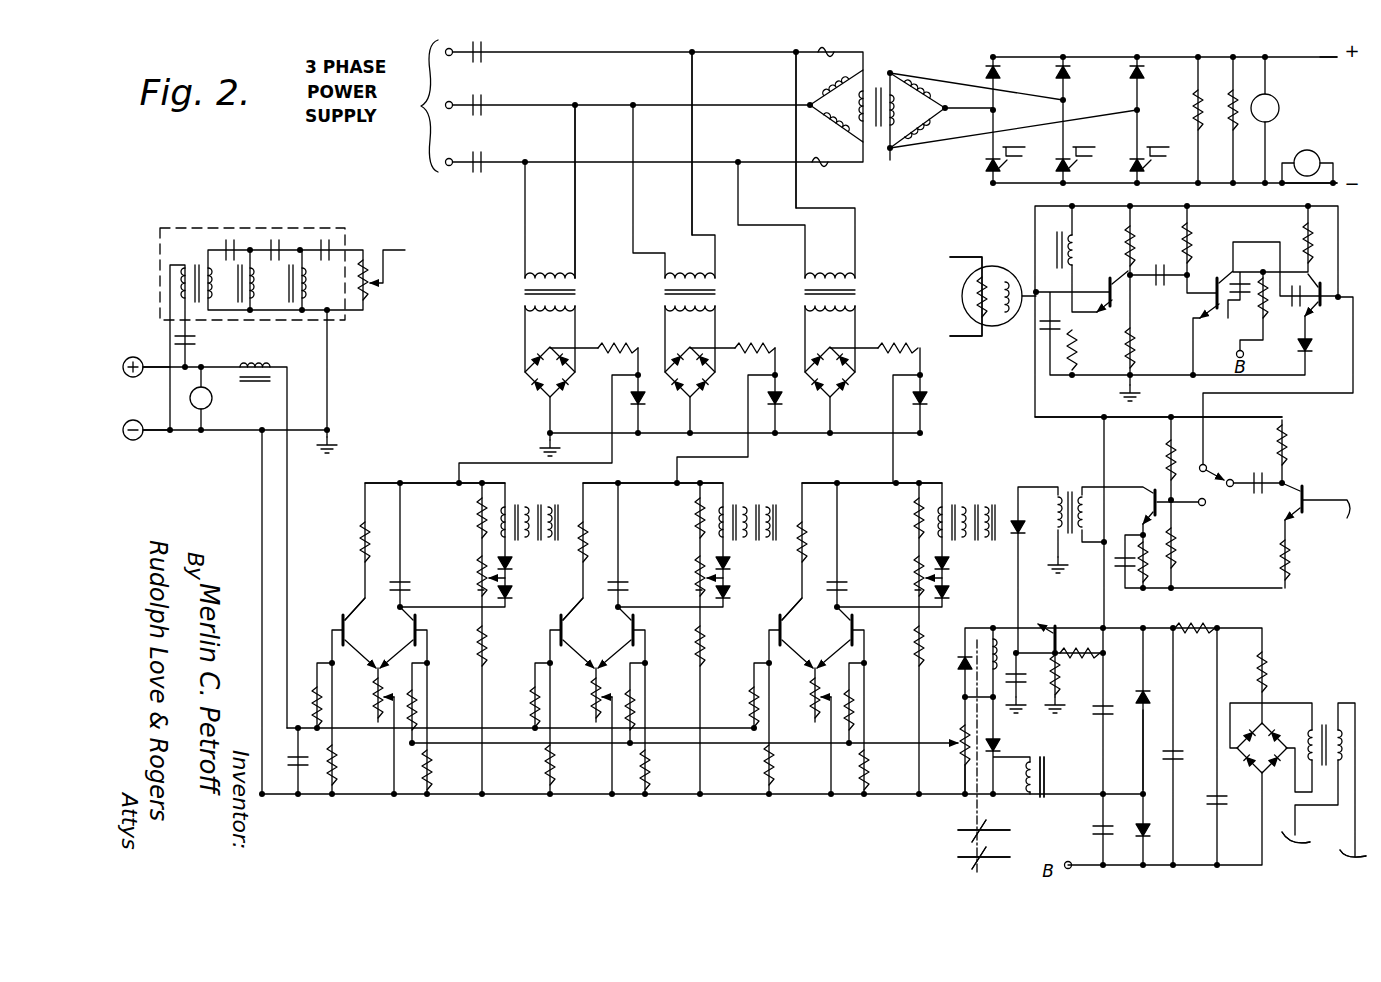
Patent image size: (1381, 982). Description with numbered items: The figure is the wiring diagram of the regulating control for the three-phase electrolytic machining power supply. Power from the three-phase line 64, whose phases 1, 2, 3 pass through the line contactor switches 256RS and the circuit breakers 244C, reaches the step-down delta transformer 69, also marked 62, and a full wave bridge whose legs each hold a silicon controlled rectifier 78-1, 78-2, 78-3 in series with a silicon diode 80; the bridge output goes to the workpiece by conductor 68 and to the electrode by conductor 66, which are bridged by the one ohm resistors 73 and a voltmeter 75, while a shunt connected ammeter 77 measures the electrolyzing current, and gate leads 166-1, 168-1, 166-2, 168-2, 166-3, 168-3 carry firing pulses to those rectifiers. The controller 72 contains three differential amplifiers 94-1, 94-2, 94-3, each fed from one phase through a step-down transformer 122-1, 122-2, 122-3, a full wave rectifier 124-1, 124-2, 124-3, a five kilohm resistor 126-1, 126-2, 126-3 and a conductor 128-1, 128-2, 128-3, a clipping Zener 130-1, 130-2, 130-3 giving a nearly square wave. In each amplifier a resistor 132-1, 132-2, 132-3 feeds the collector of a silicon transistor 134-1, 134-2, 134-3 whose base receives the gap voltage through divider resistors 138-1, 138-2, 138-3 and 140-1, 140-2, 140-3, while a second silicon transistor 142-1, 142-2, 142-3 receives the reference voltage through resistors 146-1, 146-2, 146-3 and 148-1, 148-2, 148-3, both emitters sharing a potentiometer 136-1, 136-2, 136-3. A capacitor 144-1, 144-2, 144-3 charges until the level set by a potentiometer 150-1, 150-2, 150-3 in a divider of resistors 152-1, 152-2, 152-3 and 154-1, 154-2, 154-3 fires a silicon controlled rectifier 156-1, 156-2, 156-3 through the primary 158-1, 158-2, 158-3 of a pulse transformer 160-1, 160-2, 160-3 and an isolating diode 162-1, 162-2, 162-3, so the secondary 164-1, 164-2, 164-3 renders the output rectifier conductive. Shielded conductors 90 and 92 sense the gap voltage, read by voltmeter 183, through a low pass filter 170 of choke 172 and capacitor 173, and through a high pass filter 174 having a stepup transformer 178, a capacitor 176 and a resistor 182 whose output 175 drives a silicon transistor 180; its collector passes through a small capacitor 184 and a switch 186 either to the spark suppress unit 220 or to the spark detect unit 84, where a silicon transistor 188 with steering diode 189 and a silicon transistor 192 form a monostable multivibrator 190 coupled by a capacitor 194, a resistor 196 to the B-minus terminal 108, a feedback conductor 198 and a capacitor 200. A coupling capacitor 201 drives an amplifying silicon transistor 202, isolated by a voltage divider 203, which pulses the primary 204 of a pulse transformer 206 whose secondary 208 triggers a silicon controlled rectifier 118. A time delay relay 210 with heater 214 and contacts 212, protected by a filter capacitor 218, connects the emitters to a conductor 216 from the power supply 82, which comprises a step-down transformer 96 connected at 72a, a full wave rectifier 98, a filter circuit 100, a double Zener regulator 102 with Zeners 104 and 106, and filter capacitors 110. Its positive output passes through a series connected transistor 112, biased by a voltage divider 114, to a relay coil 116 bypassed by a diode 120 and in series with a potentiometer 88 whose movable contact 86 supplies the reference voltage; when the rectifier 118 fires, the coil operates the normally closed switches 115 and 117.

The phase line 1 is at (572, 108).
The phase line 2 is at (685, 56).
The phase line 3 is at (790, 60).
The three phase power supply 64 is at (422, 118).
The fuses 256RS is at (488, 156).
The fuses 244C is at (822, 166).
The delta transformer 62 is at (928, 162).
The secondary winding 69 is at (890, 160).
The rectifier leg 1 78-1 is at (985, 172).
The rectifier leg 2 78-2 is at (1058, 174).
The rectifier leg 3 78-3 is at (1130, 174).
The diodes 80 is at (1130, 73).
The gate winding 166-1 is at (1020, 146).
The gate winding 166-2 is at (1088, 146).
The gate winding 166-3 is at (1158, 146).
The silicon controlled rectifier 168-1 is at (1020, 167).
The silicon controlled rectifier 168-2 is at (1089, 167).
The silicon controlled rectifier 168-3 is at (1160, 167).
The resistors 73 is at (1226, 104).
The voltmeter 75 is at (1275, 97).
The ammeter 77 is at (1305, 150).
The positive output terminal 68 is at (1328, 62).
The negative output terminal 66 is at (1340, 180).
The transformer 122-1 is at (522, 292).
The transformer 122-2 is at (662, 290).
The transformer 122-3 is at (802, 292).
The bridge rectifier 124-1 is at (534, 382).
The bridge rectifier 124-2 is at (685, 392).
The bridge rectifier 124-3 is at (825, 392).
The resistor 126-1 is at (618, 343).
The resistor 126-2 is at (757, 343).
The resistor 126-3 is at (898, 343).
The zener diode 128-1 is at (628, 398).
The zener diode 128-2 is at (765, 398).
The zener diode 128-3 is at (910, 398).
The supply lead 130-1 is at (620, 405).
The supply lead 130-2 is at (760, 405).
The supply lead 130-3 is at (908, 406).
The power supply section 72 is at (484, 420).
The transformer 178 is at (192, 262).
The filter network 174 is at (252, 230).
The capacitor 176 is at (198, 338).
The potentiometer 182 is at (365, 262).
The wiper connection 175 is at (390, 262).
The inductor 172 is at (268, 362).
The positive input terminal 90 is at (158, 362).
The negative input terminal 92 is at (158, 438).
The voltmeter 183 is at (210, 408).
The line 170 is at (256, 400).
The capacitor 173 is at (290, 770).
The firing circuit 94-1 is at (432, 478).
The firing circuit 94-2 is at (653, 463).
The firing circuit 94-3 is at (872, 463).
The resistor 132-1 is at (360, 546).
The resistor 132-2 is at (544, 542).
The resistor 132-3 is at (763, 542).
The transistor 134-1 is at (340, 616).
The transistor 134-2 is at (550, 623).
The transistor 134-3 is at (769, 623).
The transistor 142-1 is at (411, 631).
The transistor 142-2 is at (590, 641).
The transistor 142-3 is at (809, 641).
The capacitor 144-1 is at (403, 580).
The capacitor 144-2 is at (626, 569).
The capacitor 144-3 is at (845, 569).
The resistor 152-1 is at (478, 514).
The resistor 152-2 is at (659, 516).
The resistor 152-3 is at (878, 516).
The potentiometer 158-1 is at (479, 560).
The potentiometer 158-2 is at (658, 558).
The potentiometer 158-3 is at (877, 558).
The resistor 150-1 is at (478, 590).
The resistor 150-2 is at (655, 597).
The resistor 150-3 is at (874, 597).
The resistor 154-1 is at (478, 652).
The resistor 154-2 is at (661, 642).
The resistor 154-3 is at (880, 642).
The pulse transformer 160-1 is at (540, 500).
The pulse transformer 160-2 is at (746, 503).
The pulse transformer 160-3 is at (965, 503).
The diode 164-1 is at (512, 564).
The diode 164-2 is at (744, 567).
The diode 164-3 is at (963, 567).
The wiper 156-1 is at (509, 578).
The wiper 156-2 is at (739, 584).
The wiper 156-3 is at (958, 584).
The diode 162-1 is at (512, 597).
The diode 162-2 is at (742, 599).
The diode 162-3 is at (961, 599).
The resistor 138-1 is at (315, 688).
The resistor 138-2 is at (513, 681).
The resistor 138-3 is at (732, 681).
The potentiometer 136-1 is at (374, 702).
The potentiometer 136-2 is at (572, 698).
The potentiometer 136-3 is at (791, 698).
The resistor 146-1 is at (417, 718).
The resistor 146-2 is at (653, 710).
The resistor 146-3 is at (872, 710).
The resistor 140-1 is at (337, 766).
The resistor 140-2 is at (572, 765).
The resistor 140-3 is at (791, 765).
The resistor 148-1 is at (424, 786).
The resistor 148-2 is at (620, 789).
The resistor 148-3 is at (839, 789).
The transformer 210 is at (1000, 278).
The primary winding 214 is at (962, 300).
The secondary winding 212 is at (1012, 318).
The transformer core 206 is at (1052, 229).
The winding 204 is at (1080, 246).
The resistors 203 is at (1125, 246).
The resistor 202 is at (1110, 306).
The capacitor 218 is at (1040, 340).
The control circuit 84 is at (1030, 370).
The capacitor 201 is at (1158, 264).
The resistor 198 is at (1195, 243).
The transistor 192 is at (1210, 300).
The capacitor 194 is at (1243, 280).
The resistor 190 is at (1256, 242).
The resistor 196 is at (1258, 310).
The capacitor 200 is at (1293, 304).
The transistor 188 is at (1324, 308).
The diode 189 is at (1297, 344).
The terminal B 108 is at (1236, 357).
The line 216 is at (1058, 420).
The transistor amplifier 112 is at (1056, 624).
The switch 186 is at (1226, 470).
The capacitor 184 is at (1255, 494).
The transistor 180 is at (1306, 488).
The resistor 220 is at (1260, 582).
The relay coil 116 is at (986, 646).
The diode 120 is at (960, 670).
The potentiometer 86 is at (958, 744).
The potentiometer 88 is at (960, 758).
The resistor 114 is at (1062, 672).
The diode 118 is at (1002, 741).
The winding 208 is at (1046, 777).
The capacitors 110 is at (1095, 712).
The zener diode 104 is at (1138, 690).
The line 102 is at (1140, 795).
The zener diode 106 is at (1150, 830).
The capacitor 100 is at (1188, 770).
The resistor 82 is at (1278, 690).
The transformer 96 is at (1325, 722).
The bridge rectifier 98 is at (1258, 775).
The power supply leads 72a is at (1324, 858).
The contact 115 is at (965, 831).
The contact 117 is at (965, 857).